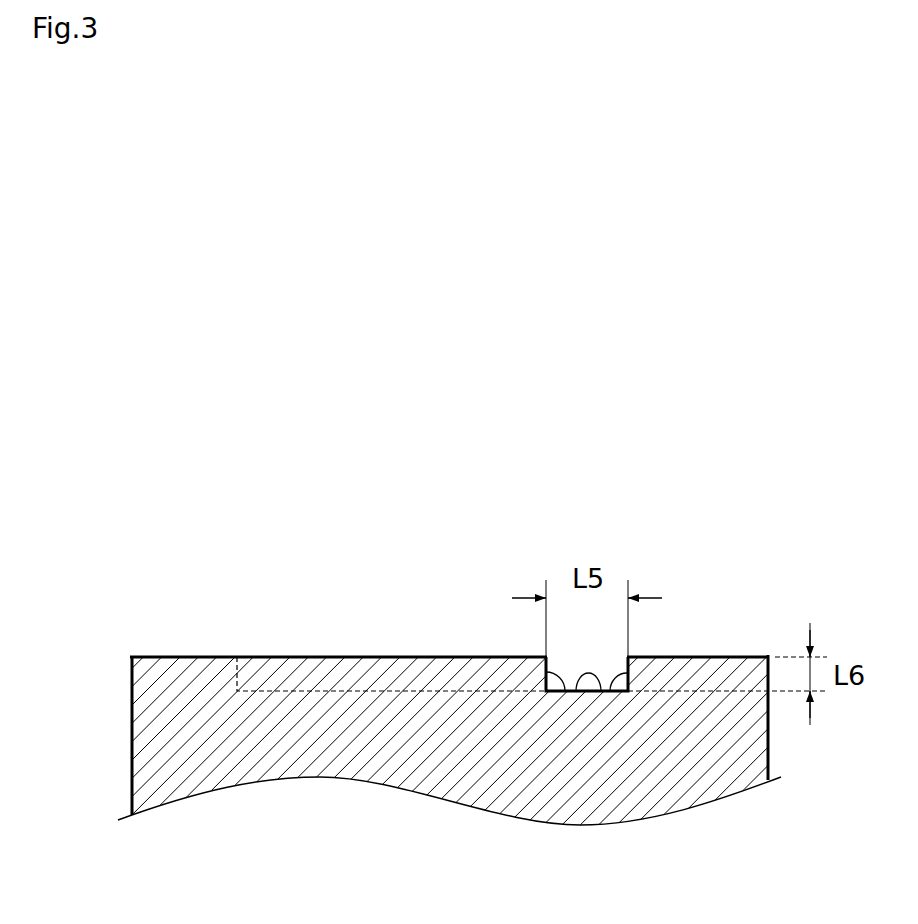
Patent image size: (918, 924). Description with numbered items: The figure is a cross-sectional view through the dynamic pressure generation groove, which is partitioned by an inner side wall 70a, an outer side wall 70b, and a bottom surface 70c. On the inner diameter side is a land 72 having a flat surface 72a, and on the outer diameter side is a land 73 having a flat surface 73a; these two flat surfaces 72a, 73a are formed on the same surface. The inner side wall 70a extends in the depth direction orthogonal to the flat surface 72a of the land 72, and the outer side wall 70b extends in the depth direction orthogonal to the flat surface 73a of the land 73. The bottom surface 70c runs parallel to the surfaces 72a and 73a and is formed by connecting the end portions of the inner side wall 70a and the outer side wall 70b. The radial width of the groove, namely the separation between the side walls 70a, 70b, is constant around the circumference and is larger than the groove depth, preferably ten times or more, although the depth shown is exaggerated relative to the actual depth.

The land on the inner diameter side 72 is at (335, 652).
The flat surface of the inner land 72a is at (200, 657).
The land on the outer diameter side 73 is at (723, 652).
The flat surface of the outer land 73a is at (678, 657).
The inner side wall 70a is at (560, 691).
The outer side wall 70b is at (613, 691).
The bottom surface 70c is at (596, 691).